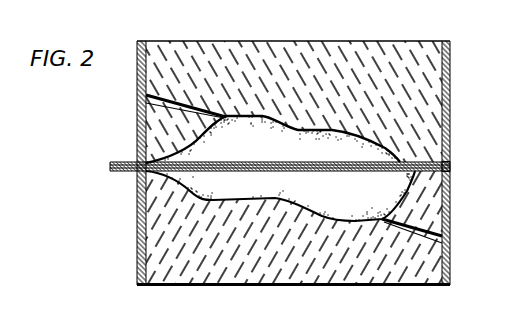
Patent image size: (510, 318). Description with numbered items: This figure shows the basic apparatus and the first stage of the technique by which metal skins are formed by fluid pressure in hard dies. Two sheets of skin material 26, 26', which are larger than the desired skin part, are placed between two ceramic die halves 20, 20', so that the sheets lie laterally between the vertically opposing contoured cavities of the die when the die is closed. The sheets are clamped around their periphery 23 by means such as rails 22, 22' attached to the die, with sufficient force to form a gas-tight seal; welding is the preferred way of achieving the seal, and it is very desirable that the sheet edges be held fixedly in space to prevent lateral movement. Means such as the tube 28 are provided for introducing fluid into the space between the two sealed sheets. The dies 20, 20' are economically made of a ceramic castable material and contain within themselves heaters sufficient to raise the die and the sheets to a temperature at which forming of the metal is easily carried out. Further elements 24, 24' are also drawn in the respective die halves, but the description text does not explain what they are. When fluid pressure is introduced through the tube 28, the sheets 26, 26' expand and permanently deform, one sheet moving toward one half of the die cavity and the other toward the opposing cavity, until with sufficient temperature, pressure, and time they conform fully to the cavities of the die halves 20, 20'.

The ceramic die half 20 is at (293, 150).
The ceramic die half 20' is at (293, 241).
The rail 22 is at (316, 163).
The rail 22' is at (469, 224).
The periphery 23 is at (450, 165).
The upper injection nozzle passage 24 is at (315, 120).
The lower injection nozzle passage 24' is at (400, 265).
The sheet of skin material 26 is at (273, 140).
The sheet of skin material 26' is at (280, 196).
The tube 28 is at (123, 162).